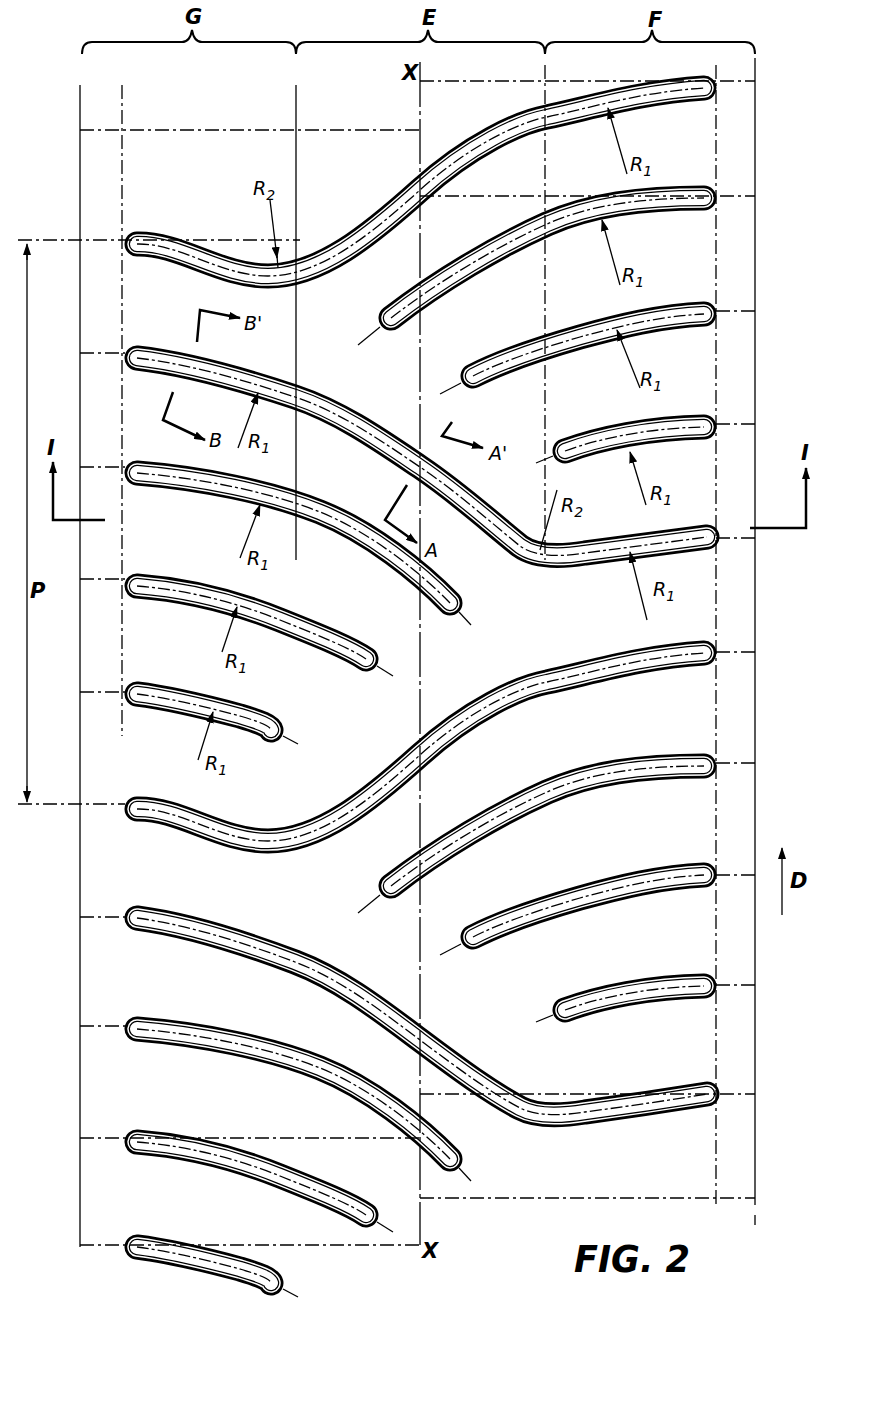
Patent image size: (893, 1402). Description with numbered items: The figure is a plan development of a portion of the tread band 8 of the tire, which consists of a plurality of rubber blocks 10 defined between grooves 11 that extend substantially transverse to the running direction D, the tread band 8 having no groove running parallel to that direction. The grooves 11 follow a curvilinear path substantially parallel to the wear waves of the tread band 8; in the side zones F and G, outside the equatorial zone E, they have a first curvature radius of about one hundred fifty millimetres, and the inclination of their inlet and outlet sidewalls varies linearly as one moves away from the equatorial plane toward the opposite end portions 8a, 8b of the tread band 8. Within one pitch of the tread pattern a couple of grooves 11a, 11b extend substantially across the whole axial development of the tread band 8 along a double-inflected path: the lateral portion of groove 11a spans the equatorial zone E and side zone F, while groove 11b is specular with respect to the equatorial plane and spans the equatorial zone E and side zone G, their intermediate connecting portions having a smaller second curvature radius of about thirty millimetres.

The tread band 8 is at (760, 232).
The end portion of the tread band 8a is at (738, 357).
The end portion of the tread band 8b is at (112, 235).
The rubber block 10 is at (160, 305).
The groove 11 is at (384, 203).
The groove 11a is at (478, 139).
The groove 11b is at (560, 563).